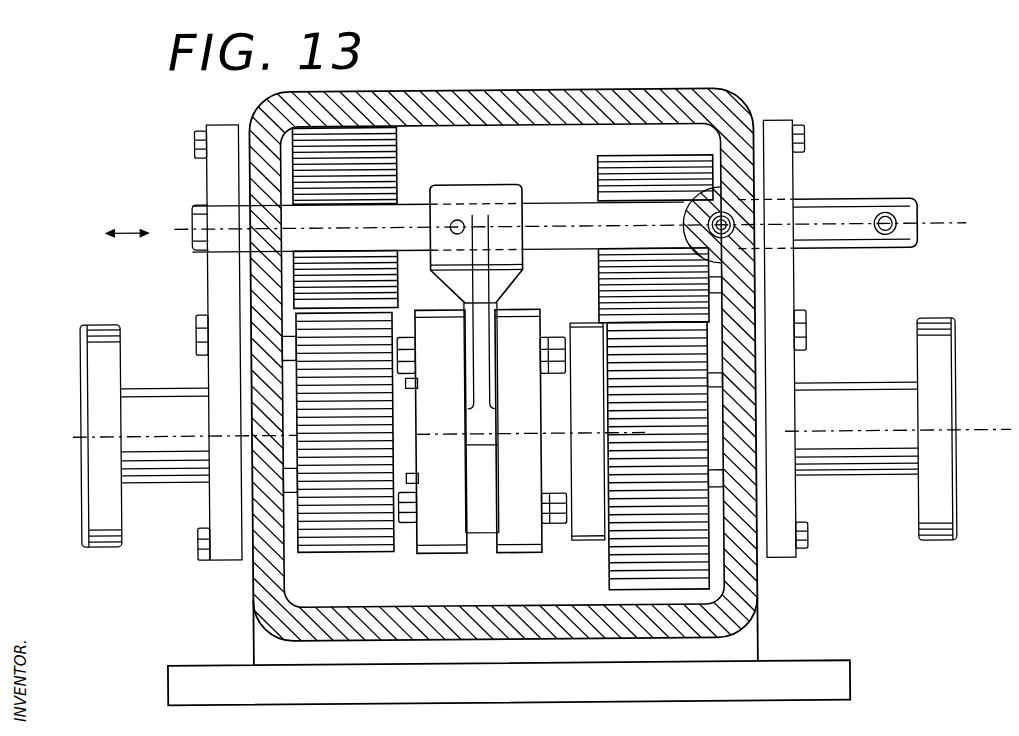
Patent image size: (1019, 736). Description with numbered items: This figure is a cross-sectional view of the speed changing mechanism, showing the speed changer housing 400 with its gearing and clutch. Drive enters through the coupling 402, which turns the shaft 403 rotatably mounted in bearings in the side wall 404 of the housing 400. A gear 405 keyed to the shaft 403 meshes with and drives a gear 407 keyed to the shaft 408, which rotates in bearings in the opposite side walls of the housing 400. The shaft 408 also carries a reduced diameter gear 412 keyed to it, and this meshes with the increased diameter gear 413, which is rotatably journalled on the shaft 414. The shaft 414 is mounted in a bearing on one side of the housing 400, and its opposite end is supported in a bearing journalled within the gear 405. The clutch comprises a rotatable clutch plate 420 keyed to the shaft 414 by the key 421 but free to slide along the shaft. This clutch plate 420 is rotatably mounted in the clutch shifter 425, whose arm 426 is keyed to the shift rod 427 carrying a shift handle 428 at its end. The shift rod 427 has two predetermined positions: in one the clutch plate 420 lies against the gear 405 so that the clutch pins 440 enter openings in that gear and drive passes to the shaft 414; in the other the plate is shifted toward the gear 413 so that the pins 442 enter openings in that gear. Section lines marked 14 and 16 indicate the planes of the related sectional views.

The speed changer housing 400 is at (630, 86).
The coupling 402 is at (97, 547).
The shaft 403 is at (165, 478).
The side wall 404 is at (211, 379).
The gear 405 is at (322, 544).
The gear 407 is at (380, 150).
The shaft 408 is at (412, 272).
The reduced diameter gear 412 is at (694, 177).
The increased diameter gear 413 is at (695, 347).
The shaft 414 is at (853, 413).
The clutch plate 420 is at (444, 556).
The key 421 is at (409, 390).
The clutch shifter 425 is at (491, 333).
The arm 426 is at (493, 328).
The shift rod 427 is at (815, 216).
The shift handle 428 is at (890, 240).
The clutch pins 440 is at (411, 526).
The pins 442 is at (549, 526).
The section line 14 is at (33, 451).
The section line 16 is at (560, 237).